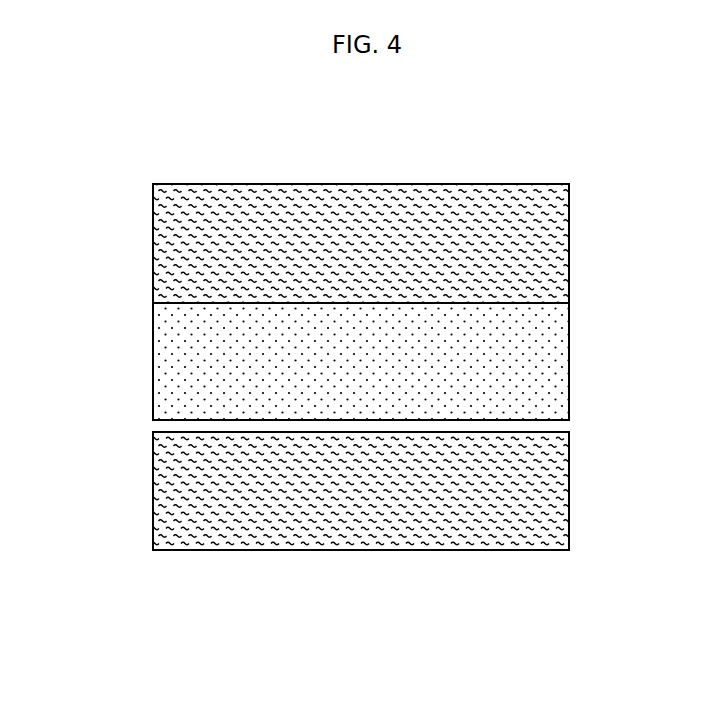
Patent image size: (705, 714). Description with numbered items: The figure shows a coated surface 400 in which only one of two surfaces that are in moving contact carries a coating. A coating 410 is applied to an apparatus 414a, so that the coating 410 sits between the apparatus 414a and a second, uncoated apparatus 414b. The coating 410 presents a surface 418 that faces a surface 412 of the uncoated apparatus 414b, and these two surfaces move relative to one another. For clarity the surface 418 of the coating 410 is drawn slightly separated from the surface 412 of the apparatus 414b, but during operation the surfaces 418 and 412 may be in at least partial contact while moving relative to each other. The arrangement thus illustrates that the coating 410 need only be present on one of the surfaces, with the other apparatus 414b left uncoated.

The coated surface 400 is at (59, 159).
The coating 410 is at (145, 302).
The surface 412 is at (486, 420).
The apparatus 414a is at (570, 243).
The uncoated apparatus 414b is at (570, 490).
The surface 418 is at (191, 432).